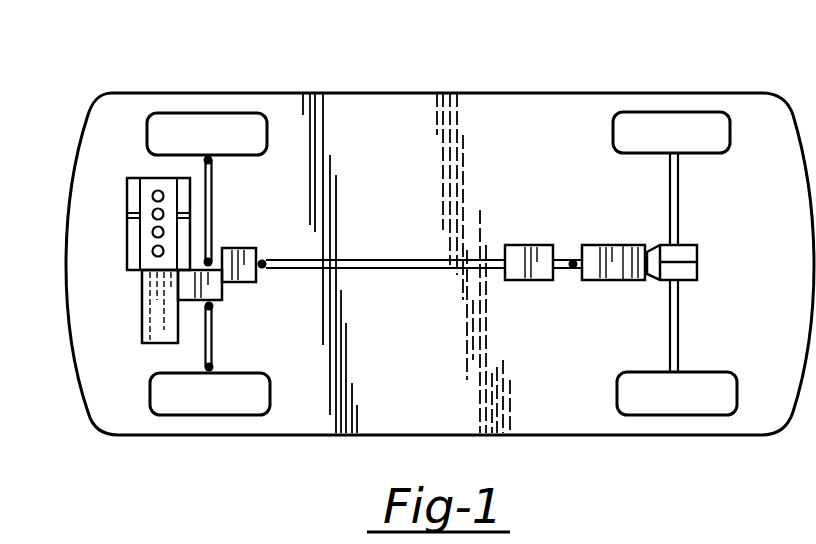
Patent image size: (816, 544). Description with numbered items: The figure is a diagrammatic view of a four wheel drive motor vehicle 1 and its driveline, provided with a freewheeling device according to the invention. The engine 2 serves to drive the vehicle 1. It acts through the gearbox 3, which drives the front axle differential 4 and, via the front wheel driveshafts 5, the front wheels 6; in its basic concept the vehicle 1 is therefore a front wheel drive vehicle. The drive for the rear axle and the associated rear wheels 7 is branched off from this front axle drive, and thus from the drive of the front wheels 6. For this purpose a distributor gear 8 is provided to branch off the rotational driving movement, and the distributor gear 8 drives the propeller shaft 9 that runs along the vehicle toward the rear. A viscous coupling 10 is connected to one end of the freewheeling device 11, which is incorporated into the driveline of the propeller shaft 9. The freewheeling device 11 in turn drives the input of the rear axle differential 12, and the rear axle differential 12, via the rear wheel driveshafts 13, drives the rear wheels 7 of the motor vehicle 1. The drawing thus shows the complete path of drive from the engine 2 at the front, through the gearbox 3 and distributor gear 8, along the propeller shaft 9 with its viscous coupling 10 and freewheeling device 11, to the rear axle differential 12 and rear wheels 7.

The vehicle 1 is at (375, 130).
The engine 2 is at (150, 253).
The gearbox 3 is at (157, 328).
The front axle differential 4 is at (187, 292).
The front wheel driveshafts 5 is at (214, 222).
The front wheels 6 is at (188, 140).
The rear wheels 7 is at (677, 145).
The distributor gear 8 is at (245, 257).
The propeller shaft 9 is at (443, 258).
The viscous coupling 10 is at (540, 280).
The freewheeling device 11 is at (620, 280).
The rear axle differential 12 is at (697, 265).
The rear wheel driveshafts 13 is at (673, 205).